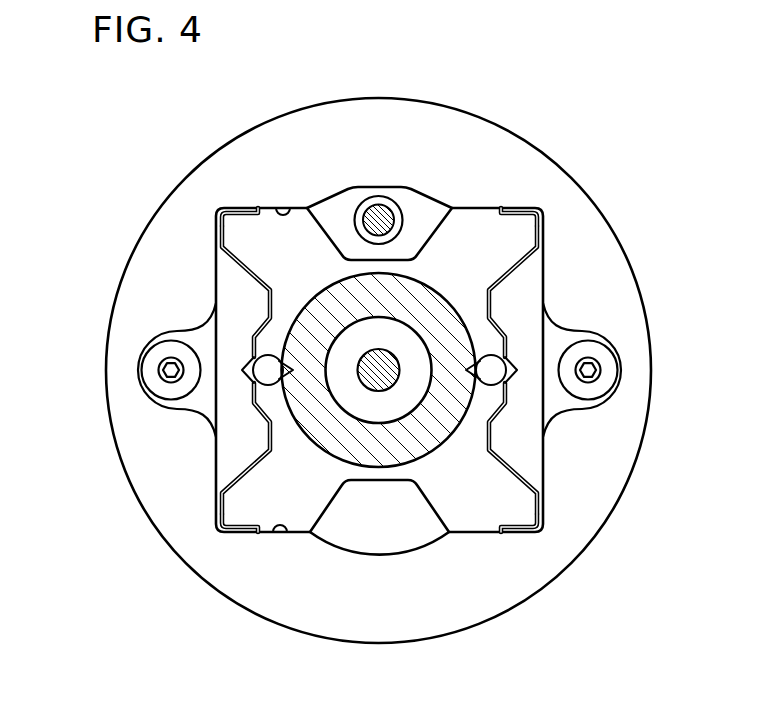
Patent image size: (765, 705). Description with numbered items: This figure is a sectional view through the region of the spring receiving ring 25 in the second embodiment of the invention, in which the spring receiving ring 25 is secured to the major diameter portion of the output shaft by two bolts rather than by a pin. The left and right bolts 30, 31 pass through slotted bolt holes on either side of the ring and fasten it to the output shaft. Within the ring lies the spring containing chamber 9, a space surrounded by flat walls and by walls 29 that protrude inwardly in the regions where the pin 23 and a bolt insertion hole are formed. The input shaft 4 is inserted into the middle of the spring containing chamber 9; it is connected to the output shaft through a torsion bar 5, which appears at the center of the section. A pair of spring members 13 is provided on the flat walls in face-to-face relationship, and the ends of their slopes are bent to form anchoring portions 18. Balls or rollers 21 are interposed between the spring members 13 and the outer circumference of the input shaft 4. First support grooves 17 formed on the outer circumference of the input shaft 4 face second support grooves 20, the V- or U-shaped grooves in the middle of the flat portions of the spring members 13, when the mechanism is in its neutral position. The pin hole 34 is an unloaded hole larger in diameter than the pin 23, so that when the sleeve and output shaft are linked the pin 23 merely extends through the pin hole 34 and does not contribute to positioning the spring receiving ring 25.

The input shaft 4 is at (415, 455).
The torsion bar 5 is at (362, 387).
The spring containing chamber 9 is at (238, 510).
The spring member 13 is at (228, 480).
The first support groove 17 is at (252, 367).
The anchoring portion 18 is at (233, 208).
The second support groove 20 is at (268, 381).
The balls or rollers 21 is at (265, 385).
The pin 23 is at (381, 187).
The spring receiving ring 25 is at (310, 120).
The wall 29 is at (275, 208).
The bolt 30 is at (166, 370).
The bolt 31 is at (600, 372).
The pin hole 34 is at (396, 205).